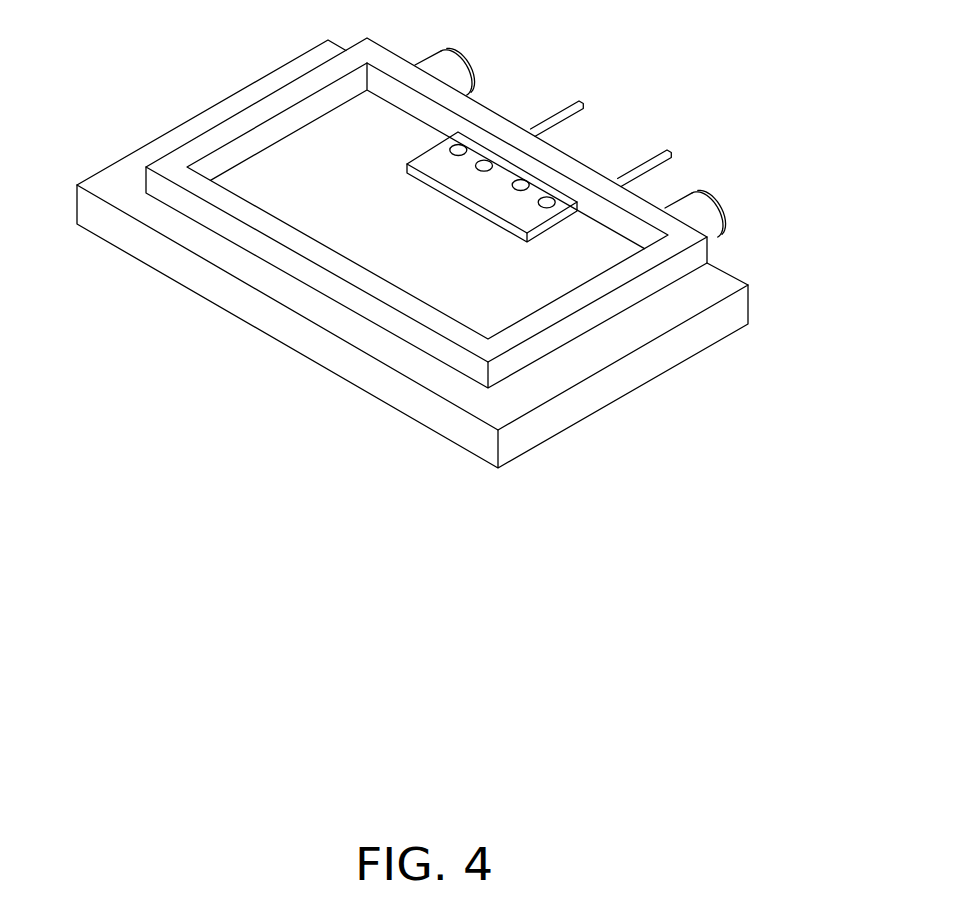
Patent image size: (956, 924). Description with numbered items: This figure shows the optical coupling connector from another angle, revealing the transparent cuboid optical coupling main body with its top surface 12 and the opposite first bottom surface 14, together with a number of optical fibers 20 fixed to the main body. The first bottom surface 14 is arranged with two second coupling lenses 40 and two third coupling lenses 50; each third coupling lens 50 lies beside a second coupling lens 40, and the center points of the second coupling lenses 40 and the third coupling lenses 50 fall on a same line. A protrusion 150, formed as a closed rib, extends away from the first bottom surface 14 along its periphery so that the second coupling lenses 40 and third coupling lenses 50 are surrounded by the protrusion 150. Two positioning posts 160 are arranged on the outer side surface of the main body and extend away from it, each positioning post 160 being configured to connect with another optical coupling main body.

The top surface 12 is at (562, 432).
The first bottom surface 14 is at (383, 342).
The optical fibers 20 is at (673, 154).
The second coupling lenses 40 is at (462, 145).
The third coupling lenses 50 is at (488, 161).
The protrusion 150 is at (215, 135).
The positioning posts 160 is at (702, 217).